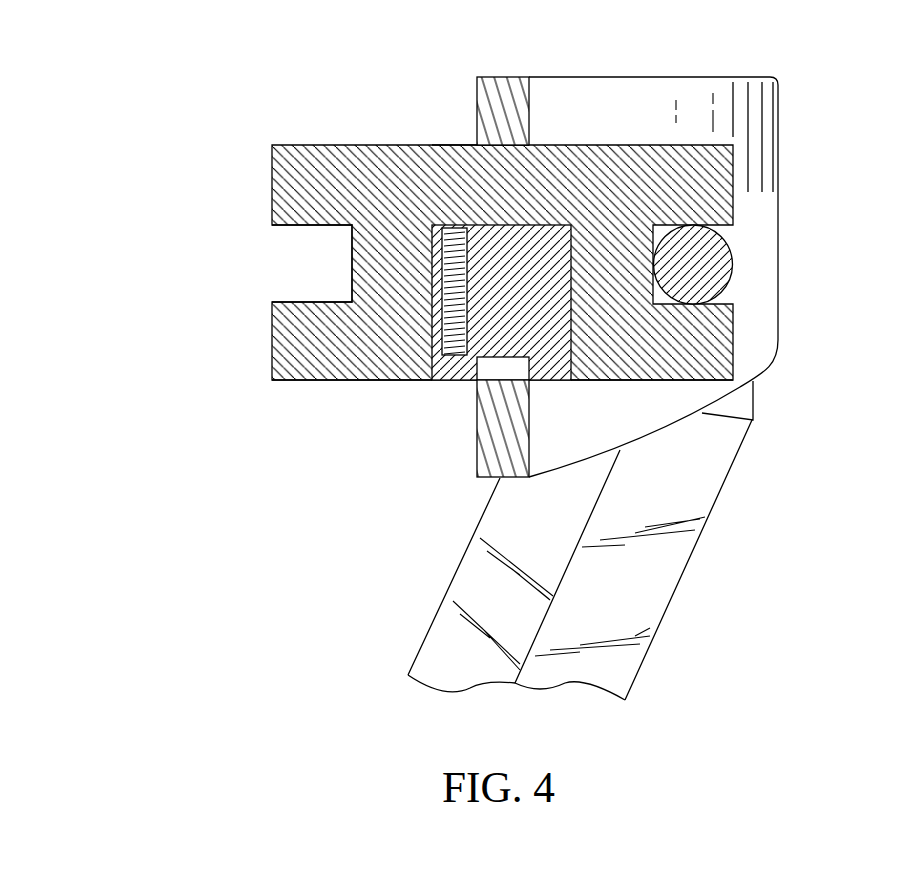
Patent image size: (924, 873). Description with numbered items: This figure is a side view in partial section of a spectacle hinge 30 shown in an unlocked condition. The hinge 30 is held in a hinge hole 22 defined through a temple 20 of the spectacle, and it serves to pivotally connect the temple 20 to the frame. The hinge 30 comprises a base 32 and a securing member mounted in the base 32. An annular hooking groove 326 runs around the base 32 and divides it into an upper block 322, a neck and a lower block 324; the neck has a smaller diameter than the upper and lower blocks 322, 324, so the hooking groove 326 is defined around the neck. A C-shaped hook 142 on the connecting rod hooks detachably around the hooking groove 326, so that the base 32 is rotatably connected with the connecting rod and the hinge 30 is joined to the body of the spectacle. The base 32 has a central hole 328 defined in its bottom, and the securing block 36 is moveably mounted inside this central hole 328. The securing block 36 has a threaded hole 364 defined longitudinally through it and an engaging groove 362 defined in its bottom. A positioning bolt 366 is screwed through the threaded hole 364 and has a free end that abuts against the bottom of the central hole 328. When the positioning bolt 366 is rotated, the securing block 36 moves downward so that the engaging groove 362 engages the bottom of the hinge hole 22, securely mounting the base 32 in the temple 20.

The hinge 30 is at (146, 96).
The temple 20 is at (500, 87).
The hinge hole 22 is at (480, 152).
The base 32 is at (785, 212).
The securing block 36 is at (552, 248).
The C-shaped hook 142 is at (722, 272).
The upper block 322 is at (360, 153).
The lower block 324 is at (280, 370).
The hooking groove 326 is at (275, 228).
The central hole 328 is at (560, 380).
The engaging groove 362 is at (507, 359).
The threaded hole 364 is at (445, 366).
The positioning bolt 366 is at (455, 370).